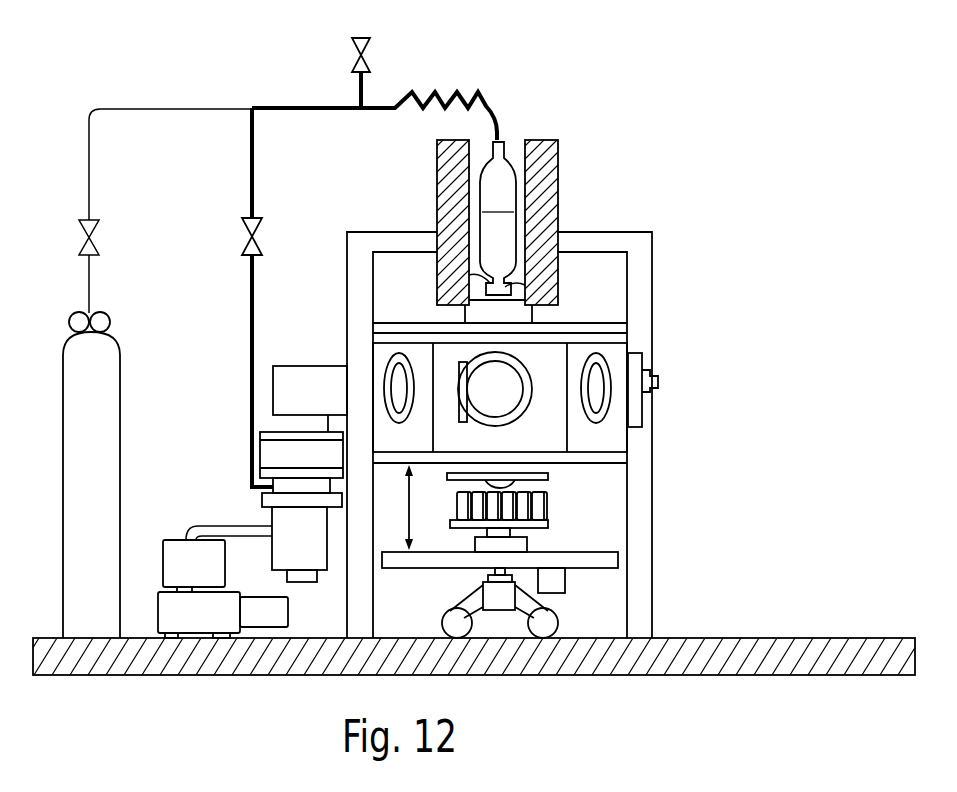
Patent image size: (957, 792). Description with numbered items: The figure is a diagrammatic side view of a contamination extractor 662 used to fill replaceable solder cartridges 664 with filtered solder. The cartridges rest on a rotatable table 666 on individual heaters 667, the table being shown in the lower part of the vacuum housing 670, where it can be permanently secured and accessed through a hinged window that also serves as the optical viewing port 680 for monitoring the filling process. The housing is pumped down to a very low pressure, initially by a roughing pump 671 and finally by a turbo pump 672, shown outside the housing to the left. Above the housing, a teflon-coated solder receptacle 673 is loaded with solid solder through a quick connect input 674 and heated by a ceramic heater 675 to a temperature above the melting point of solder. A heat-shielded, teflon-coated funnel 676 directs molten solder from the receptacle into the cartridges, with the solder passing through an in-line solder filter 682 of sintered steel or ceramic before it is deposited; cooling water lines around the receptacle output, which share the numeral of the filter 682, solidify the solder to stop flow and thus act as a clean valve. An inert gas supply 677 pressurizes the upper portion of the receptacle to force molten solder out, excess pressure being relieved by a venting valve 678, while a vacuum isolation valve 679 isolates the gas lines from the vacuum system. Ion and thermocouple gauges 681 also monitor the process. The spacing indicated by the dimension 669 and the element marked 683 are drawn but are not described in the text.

The contamination extractor 662 is at (638, 84).
The replaceable solder cartridges 664 is at (575, 490).
The rotatable table 666 is at (542, 525).
The individual heaters 667 is at (548, 500).
The spacing distance 669 is at (411, 495).
The vacuum housing 670 is at (613, 355).
The roughing pump 671 is at (184, 624).
The turbo pump 672 is at (284, 534).
The solder receptacle 673 is at (498, 218).
The quick connect input 674 is at (494, 111).
The ceramic heater 675 is at (558, 203).
The funnel 676 is at (540, 477).
The inert gas supply 677 is at (76, 461).
The venting valve 678 is at (368, 43).
The vacuum isolation valve 679 is at (260, 222).
The optical viewing port 680 is at (508, 400).
The ion and thermocouple gauges 681 is at (658, 380).
The in-line solder filter 682 is at (557, 298).
The thermocouple 683 is at (437, 298).